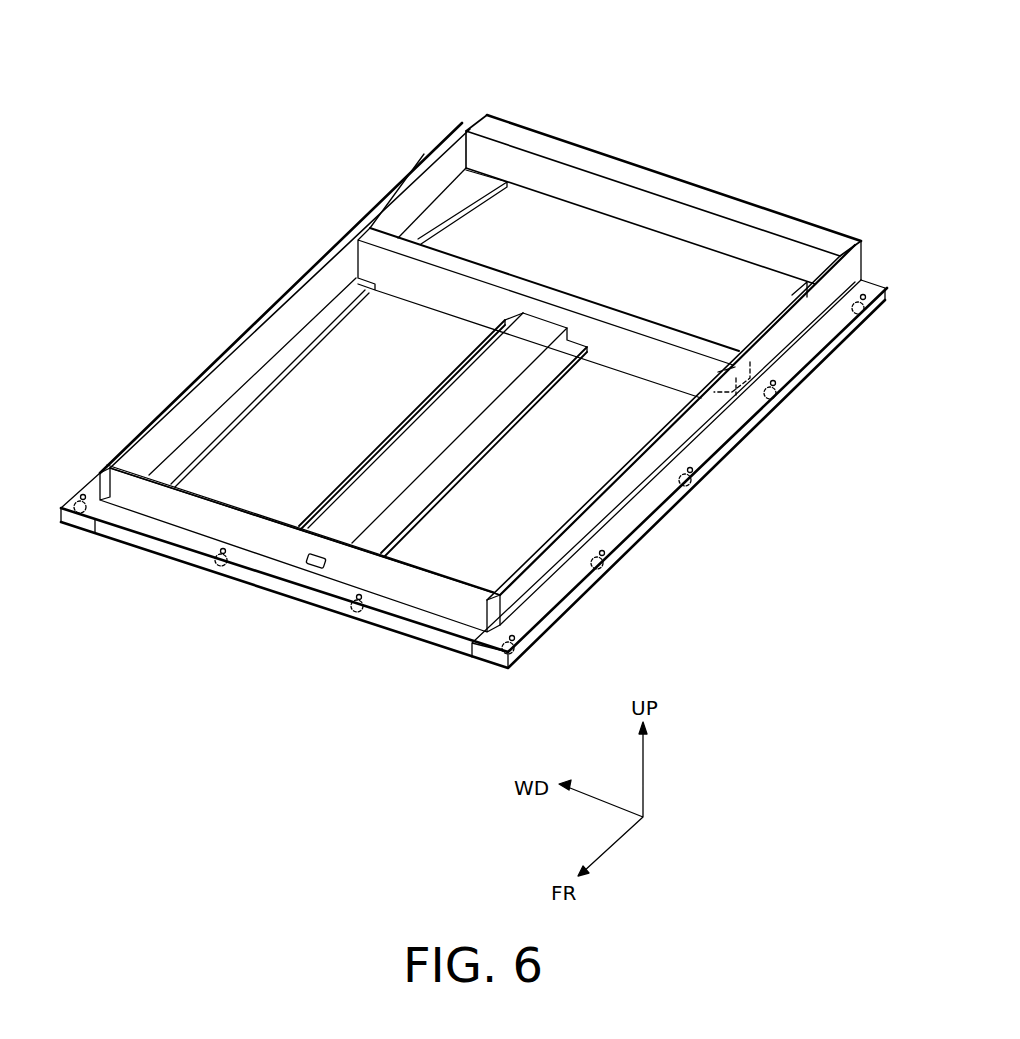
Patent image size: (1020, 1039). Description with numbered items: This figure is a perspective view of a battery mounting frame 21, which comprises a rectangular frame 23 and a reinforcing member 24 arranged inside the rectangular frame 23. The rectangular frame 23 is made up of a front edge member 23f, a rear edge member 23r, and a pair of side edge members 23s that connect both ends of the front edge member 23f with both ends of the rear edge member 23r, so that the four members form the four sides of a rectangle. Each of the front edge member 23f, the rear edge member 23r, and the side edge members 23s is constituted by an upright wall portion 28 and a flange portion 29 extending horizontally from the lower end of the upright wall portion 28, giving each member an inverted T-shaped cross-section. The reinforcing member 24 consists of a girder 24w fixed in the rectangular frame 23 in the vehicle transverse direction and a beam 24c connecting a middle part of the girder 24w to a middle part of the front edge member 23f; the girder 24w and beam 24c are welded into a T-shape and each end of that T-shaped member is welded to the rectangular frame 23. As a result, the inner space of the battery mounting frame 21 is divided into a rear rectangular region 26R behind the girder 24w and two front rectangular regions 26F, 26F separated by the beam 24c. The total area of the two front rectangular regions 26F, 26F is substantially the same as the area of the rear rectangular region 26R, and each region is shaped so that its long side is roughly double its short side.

The battery mounting frame 21 is at (474, 354).
The rectangular frame 23 is at (474, 386).
The rear edge member 23r is at (562, 146).
The side edge members 23s is at (287, 290).
The front edge member 23f is at (413, 630).
The reinforcing member 24 is at (519, 323).
The girder 24w is at (665, 330).
The beam 24c is at (443, 435).
The rear rectangular region 26R is at (607, 270).
The front rectangular regions 26F is at (357, 423).
The upright wall portion 28 is at (153, 508).
The flange portion 29 is at (185, 542).